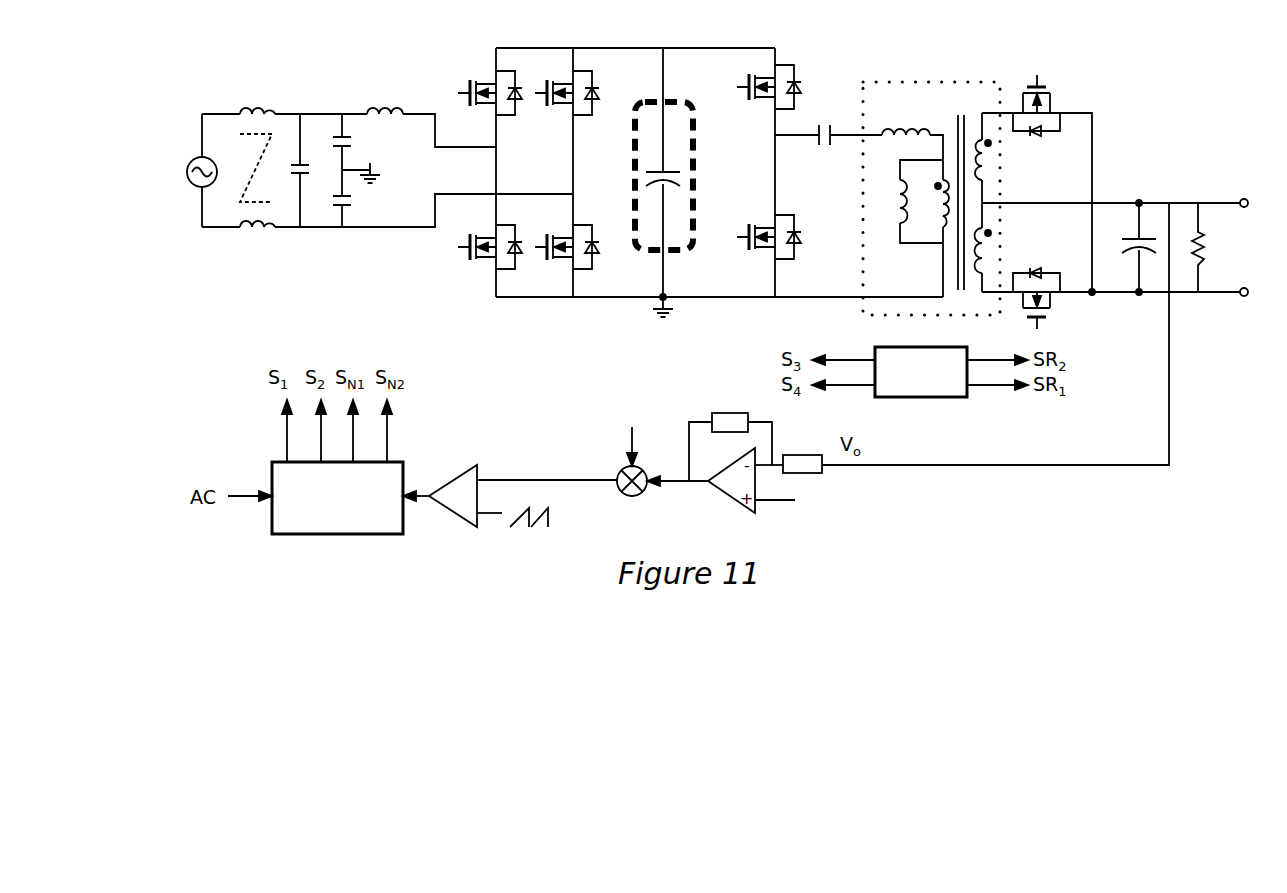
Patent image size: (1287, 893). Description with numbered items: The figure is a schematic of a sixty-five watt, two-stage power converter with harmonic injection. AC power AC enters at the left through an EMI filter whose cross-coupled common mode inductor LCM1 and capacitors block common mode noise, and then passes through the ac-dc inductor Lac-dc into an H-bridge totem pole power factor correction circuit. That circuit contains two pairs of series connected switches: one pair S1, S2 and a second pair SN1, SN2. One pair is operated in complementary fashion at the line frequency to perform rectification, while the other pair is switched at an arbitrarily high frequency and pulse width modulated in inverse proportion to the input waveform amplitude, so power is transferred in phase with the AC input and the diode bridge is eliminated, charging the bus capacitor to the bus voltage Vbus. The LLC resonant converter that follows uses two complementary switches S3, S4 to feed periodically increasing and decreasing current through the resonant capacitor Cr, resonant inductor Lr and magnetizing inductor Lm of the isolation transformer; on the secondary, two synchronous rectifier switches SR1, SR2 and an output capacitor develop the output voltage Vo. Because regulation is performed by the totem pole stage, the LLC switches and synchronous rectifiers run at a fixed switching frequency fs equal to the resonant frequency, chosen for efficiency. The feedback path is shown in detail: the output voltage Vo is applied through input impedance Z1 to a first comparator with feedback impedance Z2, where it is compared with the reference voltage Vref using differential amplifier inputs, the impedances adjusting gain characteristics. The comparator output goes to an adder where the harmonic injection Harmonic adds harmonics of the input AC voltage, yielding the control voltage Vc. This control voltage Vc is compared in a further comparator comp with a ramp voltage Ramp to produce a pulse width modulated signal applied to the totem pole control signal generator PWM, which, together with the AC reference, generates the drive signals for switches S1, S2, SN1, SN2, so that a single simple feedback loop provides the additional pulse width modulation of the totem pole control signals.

The AC input power AC is at (183, 170).
The cross-coupled common mode inductor LCM1 is at (251, 154).
The ac-dc inductor Lac-dc is at (385, 97).
The totem pole switch S1 is at (480, 86).
The totem pole switch S2 is at (481, 252).
The totem pole switch SN1 is at (557, 81).
The totem pole switch SN2 is at (562, 258).
The bus voltage Vbus is at (639, 172).
The LLC resonant converter switch S3 is at (759, 83).
The LLC resonant converter switch S4 is at (760, 234).
The resonant capacitor Cr is at (824, 121).
The resonant inductor Lr is at (906, 117).
The magnetizing inductor Lm is at (909, 201).
The synchronous rectifier switch SR1 is at (1051, 105).
The synchronous rectifier switch SR2 is at (1057, 298).
The output voltage Vo is at (1220, 247).
The pulse width modulator PWM is at (337, 498).
The comparator comp is at (440, 482).
The ramp voltage Ramp is at (523, 532).
The control voltage Vc is at (547, 465).
The harmonic injection Harmonic is at (631, 433).
The input impedance Z1 is at (788, 452).
The feedback impedance Z2 is at (730, 434).
The reference voltage Vref is at (791, 506).
The switching frequency fs is at (920, 372).